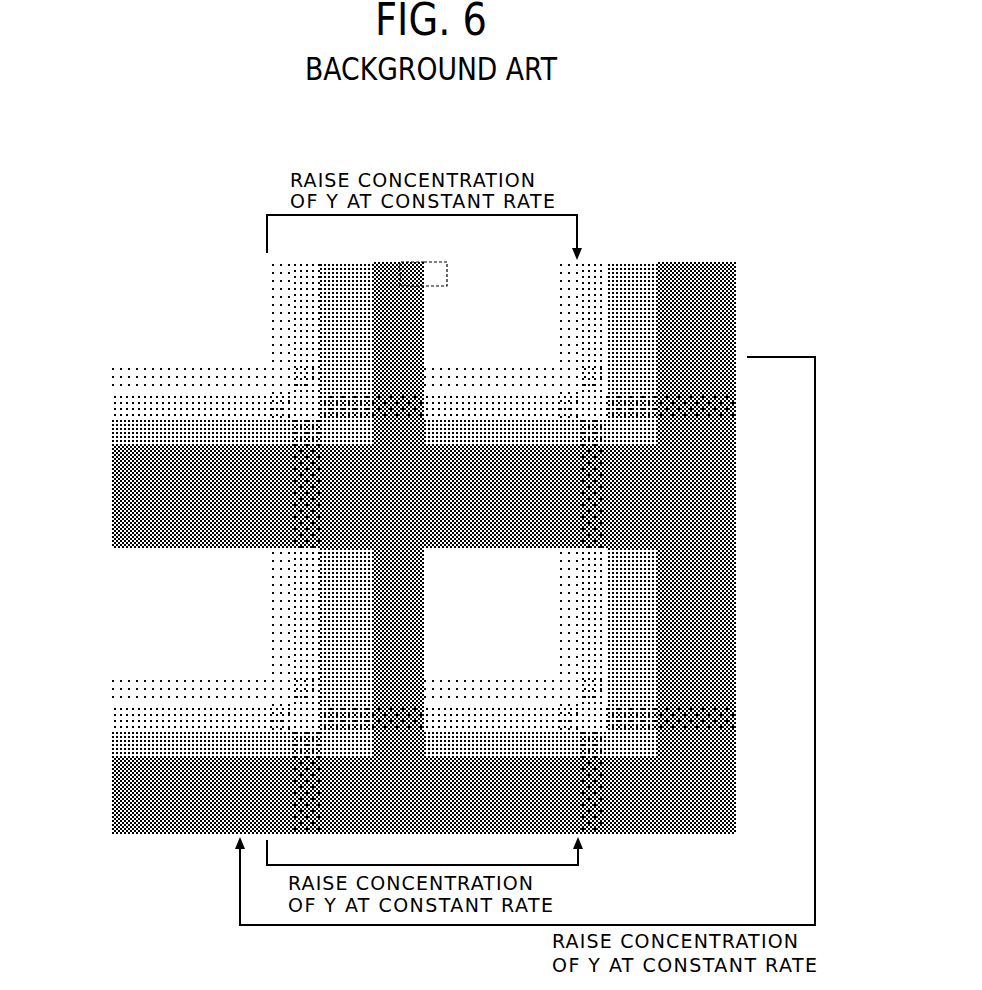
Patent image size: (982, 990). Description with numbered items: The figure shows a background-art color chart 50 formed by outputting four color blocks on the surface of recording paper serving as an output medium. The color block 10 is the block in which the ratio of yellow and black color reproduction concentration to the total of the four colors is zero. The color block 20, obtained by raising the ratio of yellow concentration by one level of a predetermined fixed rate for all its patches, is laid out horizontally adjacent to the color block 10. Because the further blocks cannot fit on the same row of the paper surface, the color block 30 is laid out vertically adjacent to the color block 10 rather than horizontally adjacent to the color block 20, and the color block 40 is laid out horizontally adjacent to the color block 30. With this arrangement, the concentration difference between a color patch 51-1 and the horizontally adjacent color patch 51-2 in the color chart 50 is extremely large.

The color block 10 is at (102, 266).
The color block 20 is at (744, 266).
The color block 30 is at (102, 826).
The color block 40 is at (744, 826).
The color chart 50 is at (690, 192).
The color patch 51-1 is at (402, 260).
The color patch 51-2 is at (458, 246).